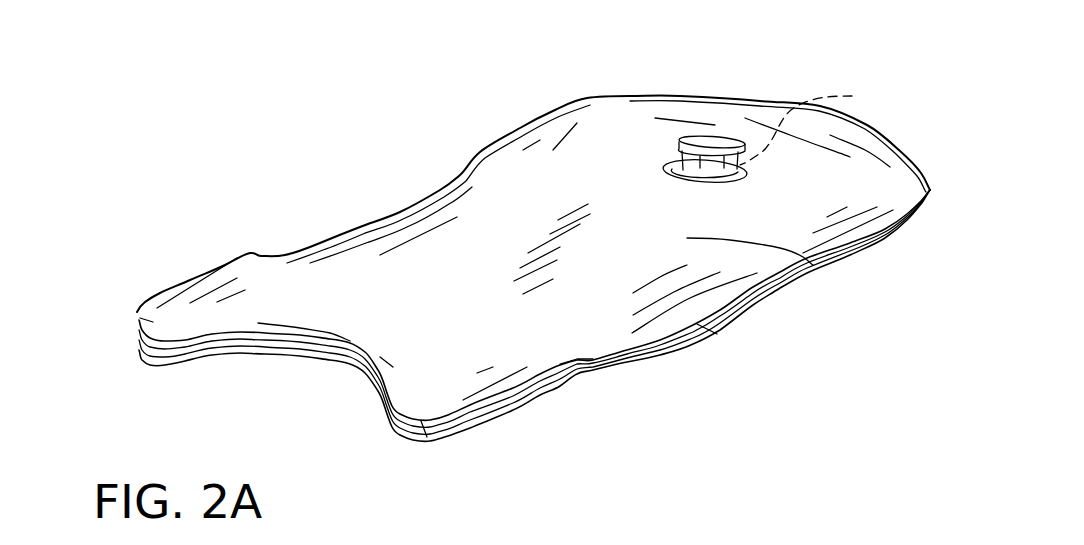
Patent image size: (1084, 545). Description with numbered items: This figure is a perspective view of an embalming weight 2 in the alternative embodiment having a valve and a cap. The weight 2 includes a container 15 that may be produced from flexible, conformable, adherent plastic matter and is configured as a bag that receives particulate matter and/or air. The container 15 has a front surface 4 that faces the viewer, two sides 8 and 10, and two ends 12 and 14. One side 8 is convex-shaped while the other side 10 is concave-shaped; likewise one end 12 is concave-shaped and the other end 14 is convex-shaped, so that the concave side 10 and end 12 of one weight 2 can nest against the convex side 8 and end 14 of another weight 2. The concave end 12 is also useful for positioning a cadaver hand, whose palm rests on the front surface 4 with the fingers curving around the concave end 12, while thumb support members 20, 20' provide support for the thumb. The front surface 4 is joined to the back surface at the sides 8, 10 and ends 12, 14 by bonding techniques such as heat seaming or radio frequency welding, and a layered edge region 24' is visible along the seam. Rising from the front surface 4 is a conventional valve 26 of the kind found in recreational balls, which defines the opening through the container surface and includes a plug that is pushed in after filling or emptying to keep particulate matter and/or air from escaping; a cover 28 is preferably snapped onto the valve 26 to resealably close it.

The embalming weight 2 is at (422, 113).
The front surface 4 is at (813, 265).
The side 8 is at (722, 334).
The side 10 is at (400, 216).
The end 12 is at (298, 356).
The end 14 is at (697, 97).
The container 15 is at (783, 326).
The thumb support member 20 is at (157, 284).
The thumb support member 20' is at (472, 412).
The step portion 24' is at (606, 393).
The valve 26 is at (815, 122).
The cover 28 is at (722, 136).